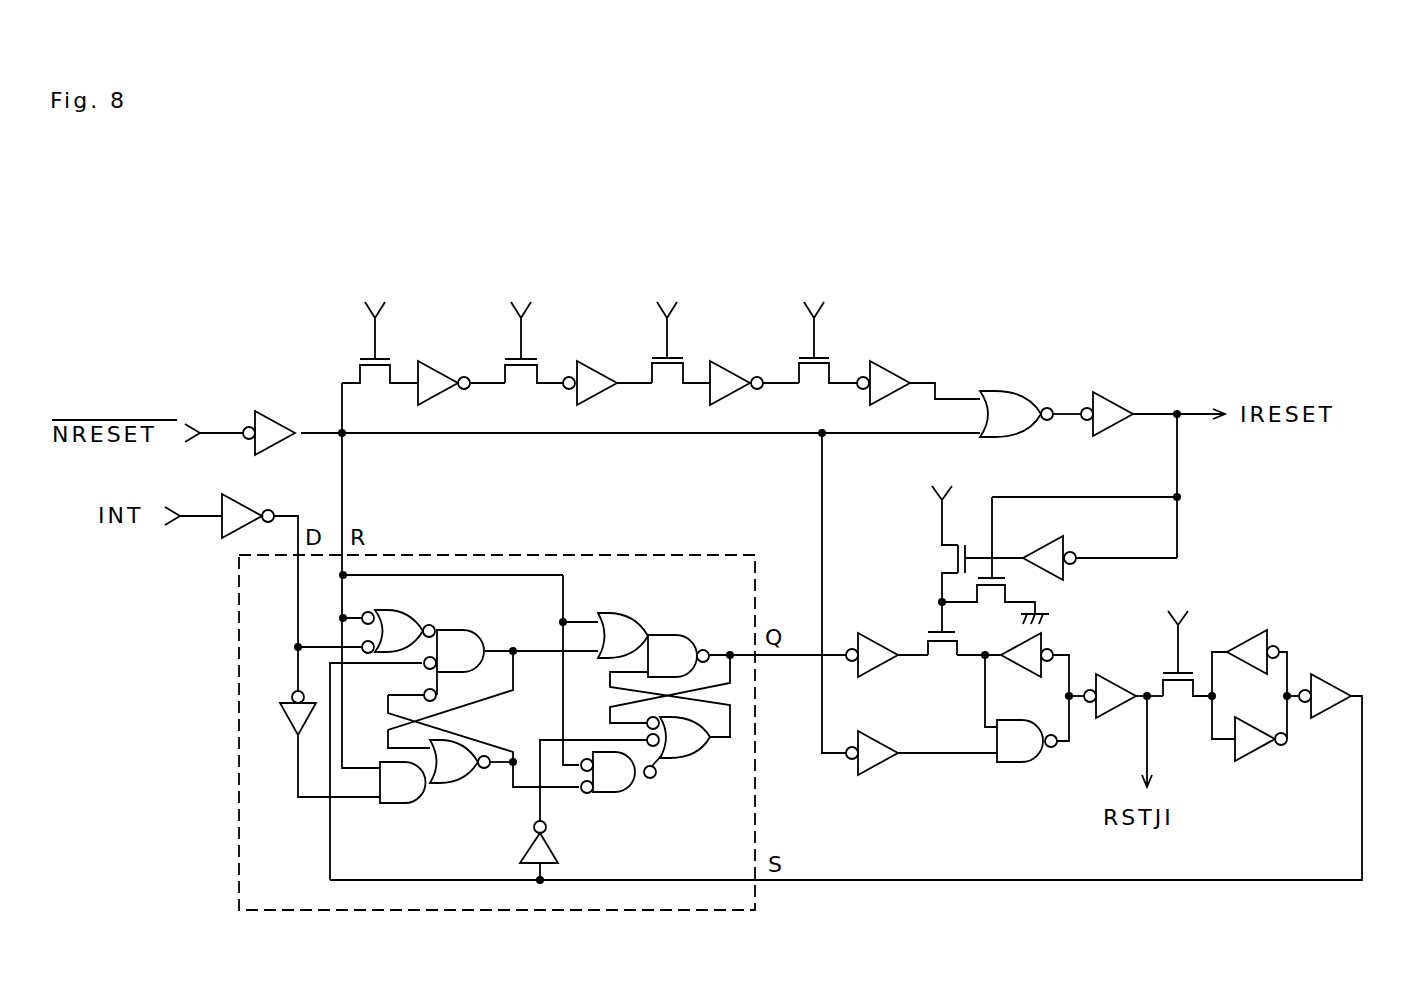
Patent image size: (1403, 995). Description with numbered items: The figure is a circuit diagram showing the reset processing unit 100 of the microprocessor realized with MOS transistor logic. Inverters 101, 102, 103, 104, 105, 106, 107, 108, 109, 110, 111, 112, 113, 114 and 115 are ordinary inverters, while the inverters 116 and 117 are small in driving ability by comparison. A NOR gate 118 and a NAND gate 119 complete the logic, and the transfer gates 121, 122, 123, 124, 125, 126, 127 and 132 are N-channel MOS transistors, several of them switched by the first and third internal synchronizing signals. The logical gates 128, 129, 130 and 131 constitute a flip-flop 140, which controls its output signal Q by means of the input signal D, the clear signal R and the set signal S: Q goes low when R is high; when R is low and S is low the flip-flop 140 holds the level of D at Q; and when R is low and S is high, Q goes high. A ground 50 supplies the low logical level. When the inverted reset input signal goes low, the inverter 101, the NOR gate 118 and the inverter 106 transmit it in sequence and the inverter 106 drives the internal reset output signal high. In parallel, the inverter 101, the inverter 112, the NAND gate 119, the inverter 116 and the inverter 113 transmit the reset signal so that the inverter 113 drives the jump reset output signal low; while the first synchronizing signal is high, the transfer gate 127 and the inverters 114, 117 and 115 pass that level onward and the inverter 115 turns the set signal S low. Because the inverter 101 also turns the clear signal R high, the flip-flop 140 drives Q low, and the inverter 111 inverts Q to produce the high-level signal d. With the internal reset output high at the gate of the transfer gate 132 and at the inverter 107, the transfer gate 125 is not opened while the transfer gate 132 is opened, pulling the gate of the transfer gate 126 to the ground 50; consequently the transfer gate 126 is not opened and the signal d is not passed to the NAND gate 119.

The reset processing unit 100 is at (1243, 228).
The inverter 101 is at (250, 425).
The inverter 102 is at (425, 365).
The inverter 103 is at (590, 370).
The inverter 104 is at (720, 372).
The inverter 105 is at (905, 382).
The inverter 106 is at (1125, 400).
The inverter 107 is at (1075, 545).
The inverter 108 is at (222, 535).
The inverter 109 is at (280, 707).
The inverter 110 is at (562, 843).
The inverter 111 is at (880, 634).
The inverter 112 is at (870, 770).
The inverter 113 is at (1113, 712).
The inverter 114 is at (1250, 755).
The inverter 115 is at (1330, 690).
The inverter 116 is at (1050, 650).
The inverter 117 is at (1250, 645).
The NOR gate 118 is at (1010, 393).
The NAND gate 119 is at (1010, 765).
The transfer gate 121 is at (345, 358).
The transfer gate 122 is at (553, 348).
The transfer gate 123 is at (683, 352).
The transfer gate 124 is at (830, 362).
The transfer gate 125 is at (945, 555).
The transfer gate 126 is at (940, 670).
The transfer gate 127 is at (1182, 700).
The logical gate 128 is at (428, 622).
The logical gate 129 is at (430, 798).
The logical gate 130 is at (650, 630).
The logical gate 131 is at (660, 778).
The transfer gate 132 is at (1020, 588).
The flip-flop 140 is at (500, 553).
The ground 50 is at (1018, 626).